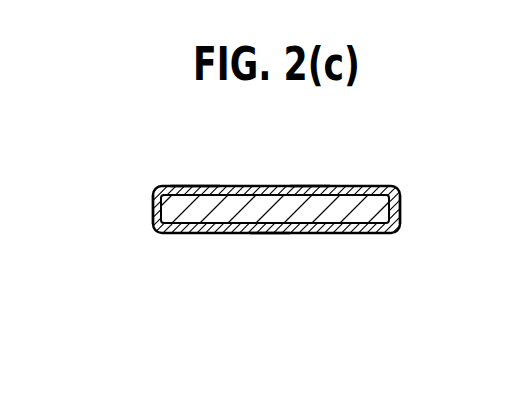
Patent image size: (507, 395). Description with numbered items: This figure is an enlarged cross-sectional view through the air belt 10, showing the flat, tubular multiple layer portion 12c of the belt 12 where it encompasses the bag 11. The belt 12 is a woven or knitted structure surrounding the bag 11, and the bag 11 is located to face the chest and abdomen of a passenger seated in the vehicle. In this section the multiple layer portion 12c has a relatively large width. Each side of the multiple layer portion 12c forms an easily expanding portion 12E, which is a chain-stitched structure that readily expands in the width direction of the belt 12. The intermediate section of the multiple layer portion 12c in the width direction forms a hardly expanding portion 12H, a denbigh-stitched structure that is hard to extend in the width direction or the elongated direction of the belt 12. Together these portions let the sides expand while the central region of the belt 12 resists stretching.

The air belt 10 is at (272, 201).
The bag 11 is at (398, 221).
The belt 12 is at (260, 186).
The multiple layer portion 12c is at (191, 186).
The easily expanding portion 12E is at (151, 202).
The hardly expanding portion 12H is at (306, 188).